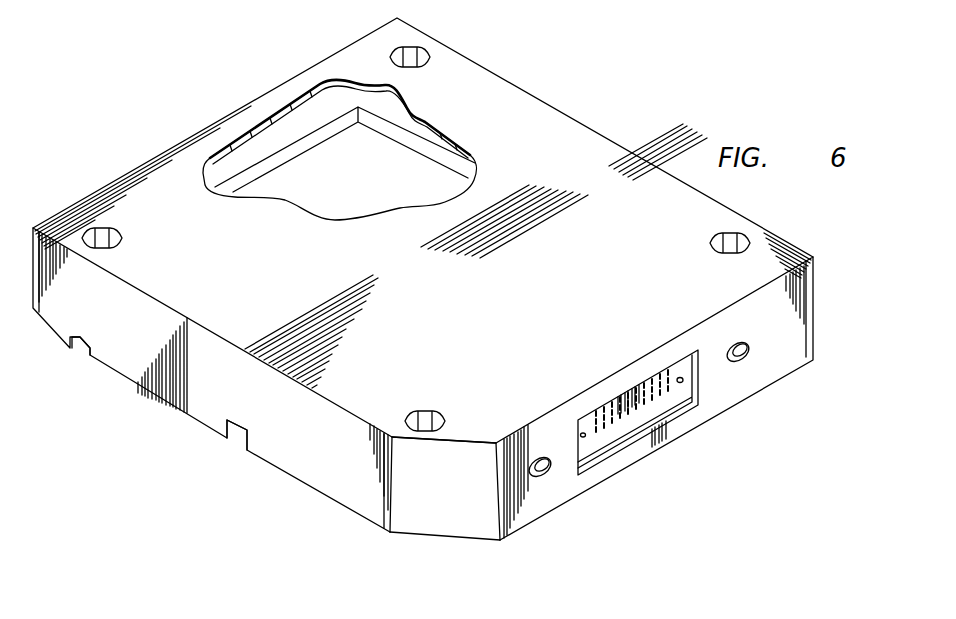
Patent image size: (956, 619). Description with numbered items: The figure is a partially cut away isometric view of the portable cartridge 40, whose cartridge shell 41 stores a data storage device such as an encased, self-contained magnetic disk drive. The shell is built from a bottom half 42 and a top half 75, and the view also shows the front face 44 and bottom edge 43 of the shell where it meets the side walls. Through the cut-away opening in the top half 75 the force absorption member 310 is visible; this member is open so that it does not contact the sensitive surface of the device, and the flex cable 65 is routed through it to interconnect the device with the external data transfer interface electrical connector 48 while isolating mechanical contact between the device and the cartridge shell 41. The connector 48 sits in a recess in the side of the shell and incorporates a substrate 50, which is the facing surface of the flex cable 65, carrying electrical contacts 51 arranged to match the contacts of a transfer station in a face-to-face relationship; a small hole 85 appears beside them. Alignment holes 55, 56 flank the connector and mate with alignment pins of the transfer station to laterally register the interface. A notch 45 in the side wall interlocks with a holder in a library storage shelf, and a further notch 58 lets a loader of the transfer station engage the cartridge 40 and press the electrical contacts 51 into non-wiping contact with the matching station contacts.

The portable cartridge 40 is at (605, 90).
The cartridge shell 41 is at (500, 76).
The bottom half of the cartridge shell 42 is at (489, 426).
The bottom edge 43 is at (478, 541).
The front face 44 is at (432, 521).
The notch 45 is at (80, 357).
The external data transfer interface electrical connector 48 is at (714, 406).
The substrate 50 is at (588, 450).
The electrical contacts 51 is at (625, 434).
The alignment hole 55 is at (547, 474).
The alignment hole 56 is at (749, 352).
The notch 58 is at (243, 434).
The flex cable 65 is at (438, 170).
The top half of the cartridge shell 75 is at (222, 150).
The alignment hole 85 is at (680, 377).
The force absorption member 310 is at (303, 123).